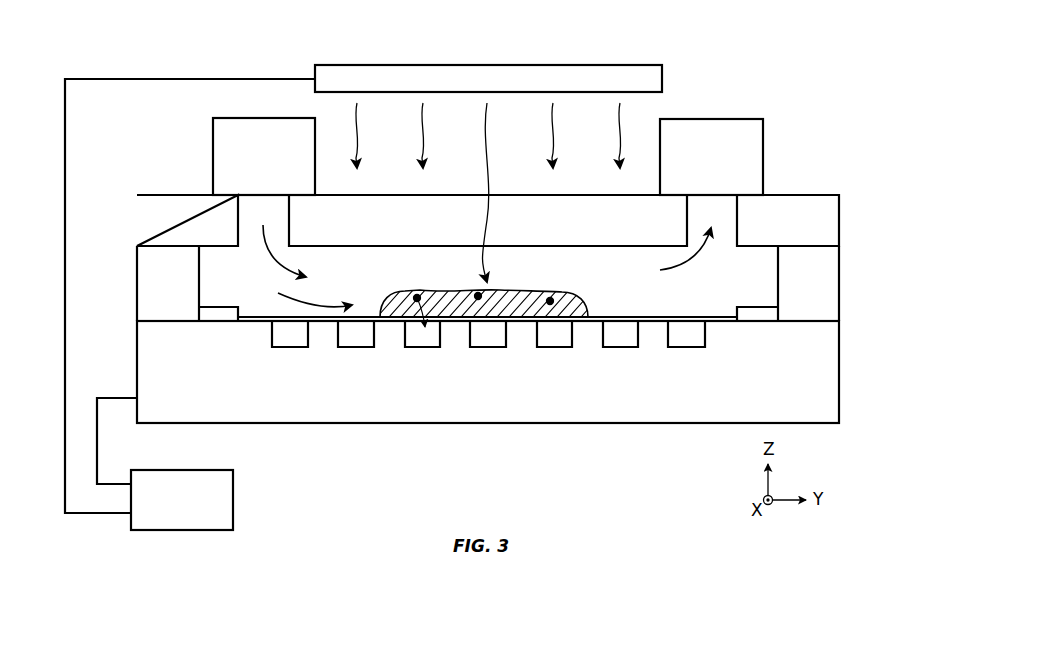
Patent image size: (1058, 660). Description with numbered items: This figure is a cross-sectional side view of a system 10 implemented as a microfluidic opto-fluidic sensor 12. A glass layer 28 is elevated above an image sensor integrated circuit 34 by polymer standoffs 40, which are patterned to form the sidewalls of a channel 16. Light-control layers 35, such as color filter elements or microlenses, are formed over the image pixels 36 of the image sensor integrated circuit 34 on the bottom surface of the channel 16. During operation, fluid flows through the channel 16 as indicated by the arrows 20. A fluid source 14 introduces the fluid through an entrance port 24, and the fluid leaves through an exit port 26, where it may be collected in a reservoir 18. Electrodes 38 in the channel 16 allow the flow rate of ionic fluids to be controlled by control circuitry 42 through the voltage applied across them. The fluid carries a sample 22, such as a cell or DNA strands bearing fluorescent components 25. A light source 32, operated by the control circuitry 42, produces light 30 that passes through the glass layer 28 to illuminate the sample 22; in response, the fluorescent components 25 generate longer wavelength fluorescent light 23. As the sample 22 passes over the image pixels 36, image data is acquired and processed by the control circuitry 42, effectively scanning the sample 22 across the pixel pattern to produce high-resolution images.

The system 10 is at (728, 32).
The opto-fluidic sensor 12 is at (55, 197).
The fluid source 14 is at (264, 156).
The channel 16 is at (645, 290).
The reservoir 18 is at (711, 157).
The fluid flow arrows 20 is at (318, 305).
The sample 22 is at (573, 302).
The fluorescent light 23 is at (414, 306).
The entrance port 24 is at (250, 237).
The fluorescent components 25 is at (478, 294).
The exit port 26 is at (727, 236).
The glass layer 28 is at (488, 220).
The light 30 is at (423, 156).
The light source 32 is at (427, 74).
The image sensor integrated circuit 34 is at (488, 372).
The light-control layers 35 is at (683, 319).
The image pixels 36 is at (618, 341).
The electrodes 38 is at (218, 316).
The standoffs 40 is at (488, 283).
The control circuitry 42 is at (228, 503).